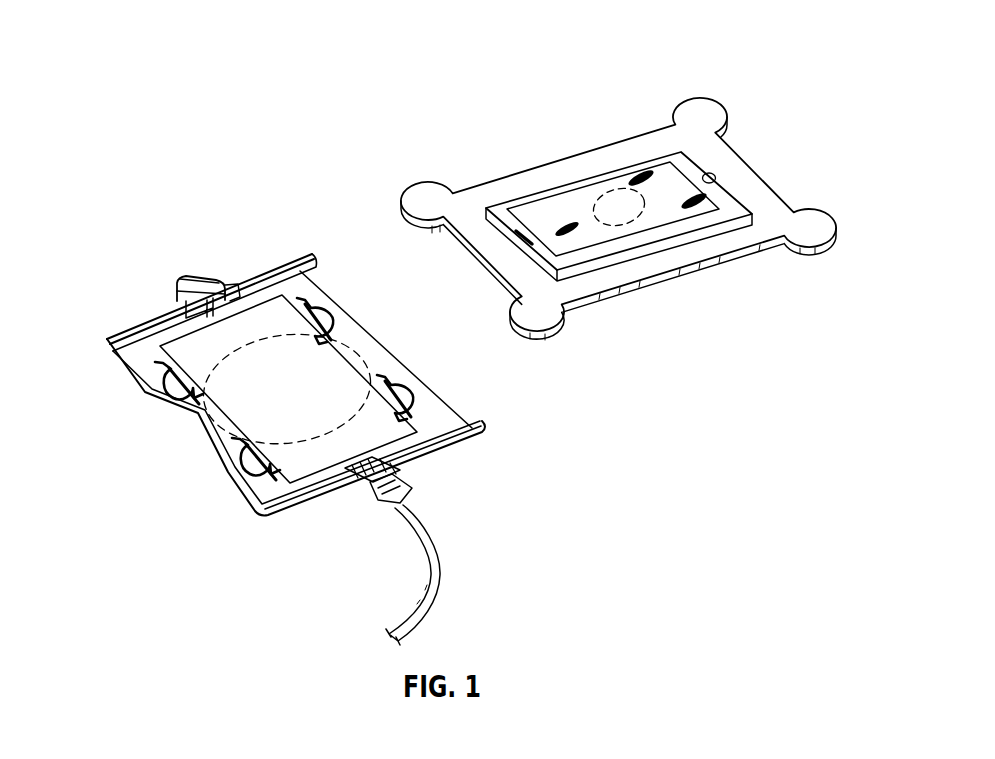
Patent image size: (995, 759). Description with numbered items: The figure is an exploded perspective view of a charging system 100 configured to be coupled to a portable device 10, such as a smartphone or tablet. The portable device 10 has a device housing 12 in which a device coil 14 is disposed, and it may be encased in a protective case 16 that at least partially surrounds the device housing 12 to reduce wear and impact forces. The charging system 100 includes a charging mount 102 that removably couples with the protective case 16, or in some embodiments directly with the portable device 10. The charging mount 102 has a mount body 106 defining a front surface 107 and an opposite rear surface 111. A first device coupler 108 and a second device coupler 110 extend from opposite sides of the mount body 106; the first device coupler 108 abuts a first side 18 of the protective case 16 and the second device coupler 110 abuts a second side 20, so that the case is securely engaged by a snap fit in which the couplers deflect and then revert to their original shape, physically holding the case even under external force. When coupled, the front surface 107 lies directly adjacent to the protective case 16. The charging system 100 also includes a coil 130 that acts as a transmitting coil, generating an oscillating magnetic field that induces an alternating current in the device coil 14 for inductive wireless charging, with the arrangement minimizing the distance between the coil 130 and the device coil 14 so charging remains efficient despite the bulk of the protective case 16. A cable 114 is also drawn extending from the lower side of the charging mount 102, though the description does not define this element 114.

The portable device 10 is at (626, 201).
The device housing 12 is at (631, 161).
The device coil 14 is at (596, 197).
The protective case 16 is at (729, 157).
The first side 18 is at (485, 184).
The second side 20 is at (614, 287).
The charging system 100 is at (284, 435).
The charging mount 102 is at (129, 386).
The mount body 106 is at (440, 412).
The front surface 107 is at (263, 487).
The first device coupler 108 is at (204, 292).
The second device coupler 110 is at (397, 468).
The rear surface 111 is at (298, 516).
The cable 114 is at (441, 570).
The coil 130 is at (328, 383).